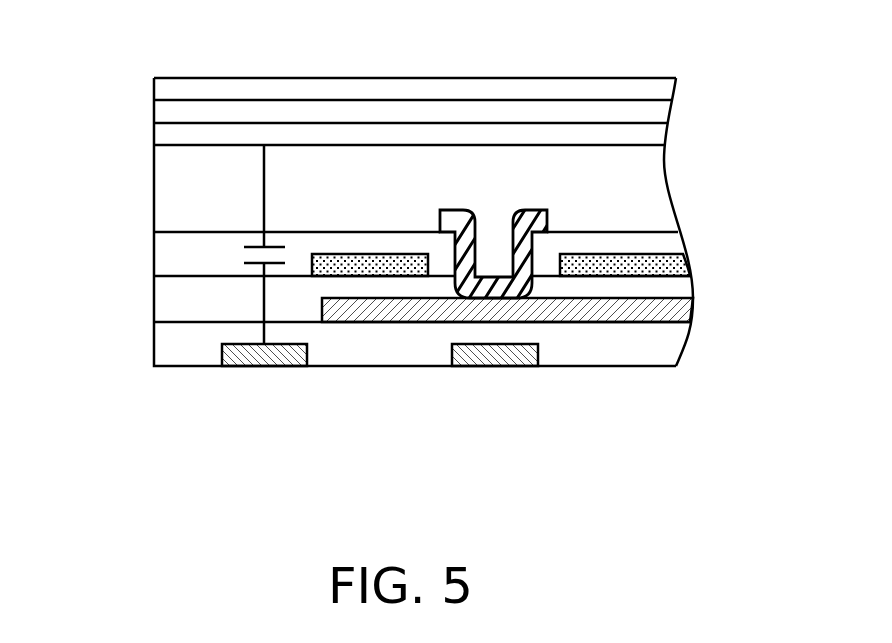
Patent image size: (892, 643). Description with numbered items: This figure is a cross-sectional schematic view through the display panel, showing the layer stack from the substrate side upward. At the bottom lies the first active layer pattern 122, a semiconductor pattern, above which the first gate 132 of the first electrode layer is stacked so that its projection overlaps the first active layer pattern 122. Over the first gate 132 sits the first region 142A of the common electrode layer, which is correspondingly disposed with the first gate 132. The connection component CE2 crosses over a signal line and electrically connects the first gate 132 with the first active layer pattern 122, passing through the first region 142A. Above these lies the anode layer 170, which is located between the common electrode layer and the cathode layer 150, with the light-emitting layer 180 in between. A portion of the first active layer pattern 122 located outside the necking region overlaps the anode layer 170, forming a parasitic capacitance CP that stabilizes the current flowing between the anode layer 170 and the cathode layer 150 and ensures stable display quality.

The cathode layer 150 is at (177, 92).
The light-emitting layer 180 is at (185, 112).
The anode layer 170 is at (183, 135).
The first region 142A is at (395, 254).
The connection component CE2 is at (538, 210).
The parasitic capacitance CP is at (248, 244).
The first active layer pattern 122 is at (258, 358).
The first gate 132 is at (415, 298).